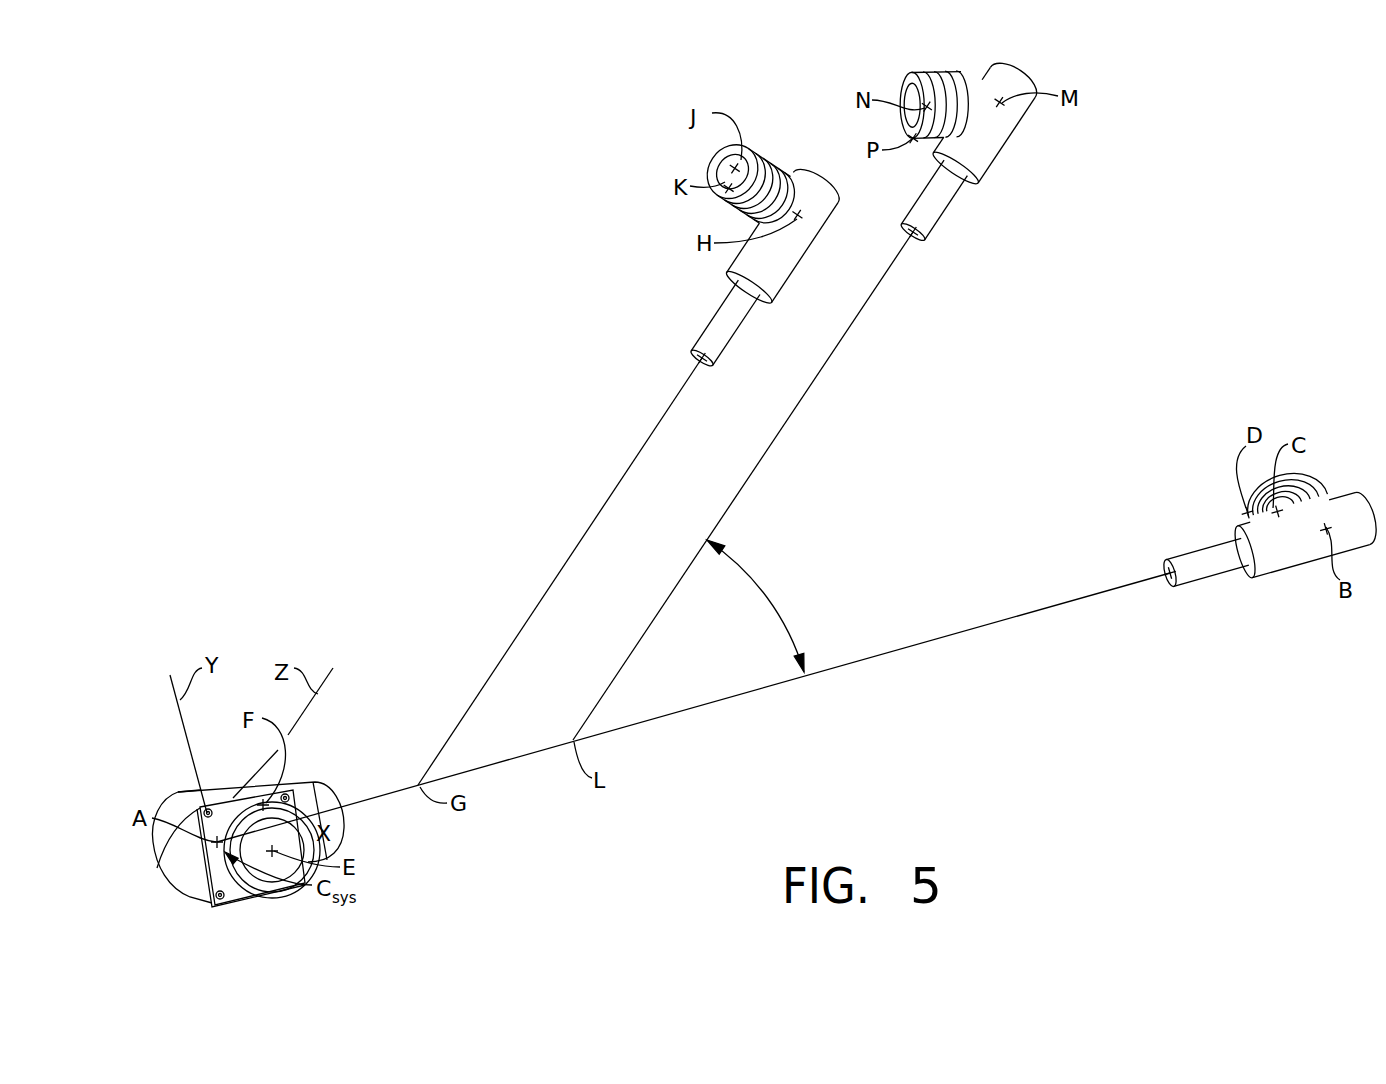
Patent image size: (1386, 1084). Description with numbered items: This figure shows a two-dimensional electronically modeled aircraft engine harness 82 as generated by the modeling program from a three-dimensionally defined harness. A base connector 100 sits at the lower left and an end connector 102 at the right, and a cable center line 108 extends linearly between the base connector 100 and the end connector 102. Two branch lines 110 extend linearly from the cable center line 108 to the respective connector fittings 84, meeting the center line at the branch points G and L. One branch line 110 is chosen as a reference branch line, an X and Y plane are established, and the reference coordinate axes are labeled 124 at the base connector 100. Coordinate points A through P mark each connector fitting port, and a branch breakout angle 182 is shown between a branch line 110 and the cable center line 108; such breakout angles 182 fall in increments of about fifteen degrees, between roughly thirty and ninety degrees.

The aircraft engine harness 82 is at (1208, 205).
The connector fitting 84 is at (786, 290).
The base connector 100 is at (192, 792).
The end connector 102 is at (1352, 492).
The cable center line 108 is at (847, 667).
The branch lines 110 is at (612, 493).
The labeled reference coordinate axes 124 is at (200, 851).
The branch breakout angles 182 is at (772, 603).